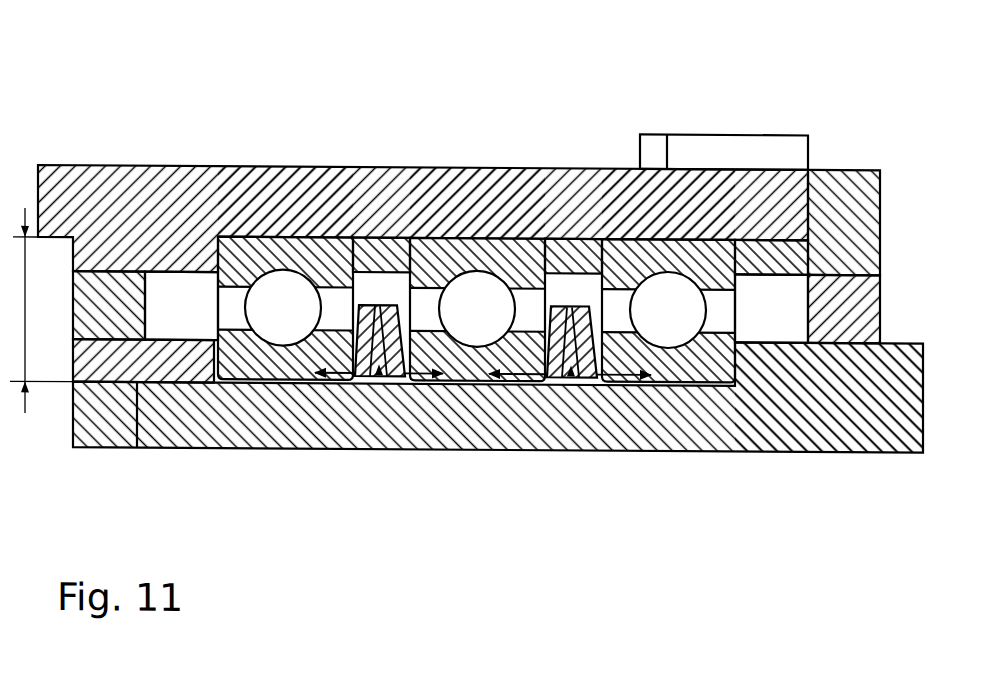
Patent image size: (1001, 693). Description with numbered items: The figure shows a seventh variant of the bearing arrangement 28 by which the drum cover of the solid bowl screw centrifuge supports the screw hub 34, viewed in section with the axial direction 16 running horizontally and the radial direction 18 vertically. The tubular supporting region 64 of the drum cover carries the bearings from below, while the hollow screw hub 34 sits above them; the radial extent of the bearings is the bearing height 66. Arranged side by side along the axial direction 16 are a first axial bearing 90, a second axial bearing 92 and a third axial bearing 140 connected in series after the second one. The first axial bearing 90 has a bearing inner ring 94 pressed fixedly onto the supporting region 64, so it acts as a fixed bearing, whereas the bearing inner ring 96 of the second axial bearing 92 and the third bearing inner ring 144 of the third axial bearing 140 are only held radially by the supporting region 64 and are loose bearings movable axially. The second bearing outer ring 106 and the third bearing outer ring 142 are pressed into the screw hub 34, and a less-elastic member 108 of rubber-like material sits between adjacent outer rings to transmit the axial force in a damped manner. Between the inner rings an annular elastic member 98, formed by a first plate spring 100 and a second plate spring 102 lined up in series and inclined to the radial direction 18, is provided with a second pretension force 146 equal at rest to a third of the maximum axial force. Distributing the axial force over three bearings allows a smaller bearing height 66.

The axial direction 16 is at (897, 183).
The radial direction 18 is at (920, 220).
The bearing arrangement 28 is at (546, 140).
The screw hub 34 is at (157, 201).
The supporting region 64 is at (816, 370).
The bearing height 66 is at (28, 297).
The first axial bearing 90 is at (678, 199).
The second axial bearing 92 is at (487, 196).
The bearing inner ring 94 is at (732, 366).
The bearing inner ring 96 is at (465, 378).
The elastic member 98 is at (379, 375).
The first plate spring 100 is at (387, 373).
The second plate spring 102 is at (370, 373).
The second bearing outer ring 106 is at (450, 234).
The less-elastic member 108 is at (385, 234).
The third axial bearing 140 is at (283, 197).
The third bearing outer ring 142 is at (230, 247).
The third bearing inner ring 144 is at (243, 369).
The second pretension force 146 is at (343, 374).